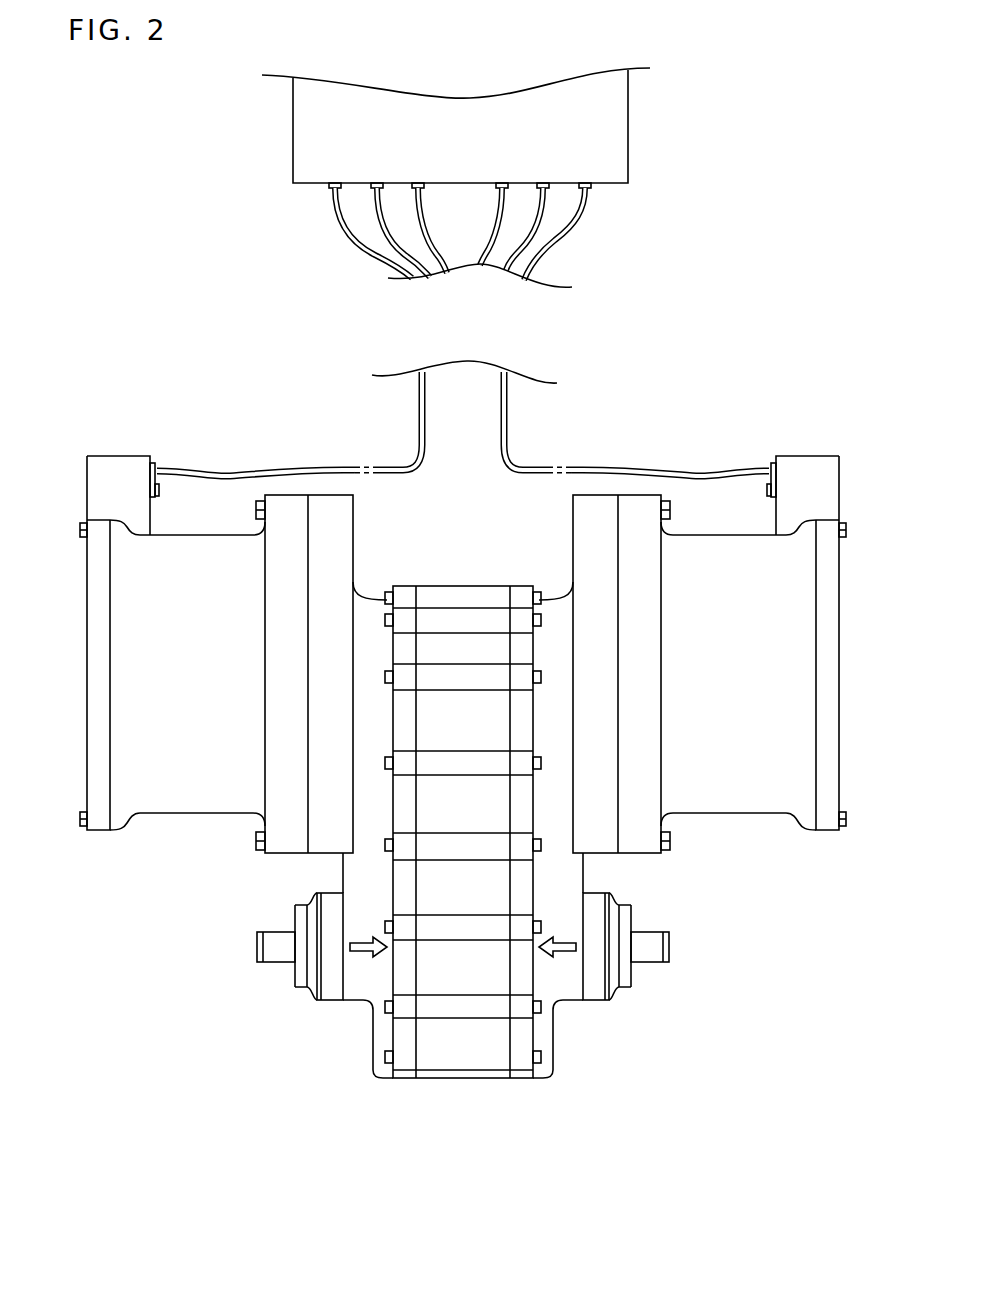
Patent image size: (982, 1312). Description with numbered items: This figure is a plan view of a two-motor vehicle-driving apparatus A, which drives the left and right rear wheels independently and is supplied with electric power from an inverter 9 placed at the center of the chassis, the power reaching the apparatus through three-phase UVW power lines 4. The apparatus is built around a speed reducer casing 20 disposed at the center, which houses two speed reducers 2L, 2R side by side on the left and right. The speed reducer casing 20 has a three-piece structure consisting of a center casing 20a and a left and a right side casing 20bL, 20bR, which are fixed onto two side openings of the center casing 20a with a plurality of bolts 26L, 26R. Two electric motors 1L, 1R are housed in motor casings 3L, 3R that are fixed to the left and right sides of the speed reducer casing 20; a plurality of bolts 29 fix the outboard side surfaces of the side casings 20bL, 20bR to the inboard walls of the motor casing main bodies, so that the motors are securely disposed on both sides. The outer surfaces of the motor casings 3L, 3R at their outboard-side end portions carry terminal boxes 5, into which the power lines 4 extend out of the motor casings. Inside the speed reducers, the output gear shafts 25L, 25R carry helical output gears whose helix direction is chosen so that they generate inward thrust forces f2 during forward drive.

The inverter 9 is at (558, 127).
The two-motor vehicle-driving apparatus A is at (300, 292).
The three-phase UVW power lines 4 is at (556, 238).
The terminal boxes 5 is at (117, 492).
The left electric motor 1L is at (125, 772).
The right electric motor 1R is at (810, 795).
The left motor casing 3L is at (190, 765).
The right motor casing 3R is at (737, 770).
The bolts 29 is at (258, 848).
The left speed reducer 2L is at (354, 1008).
The right speed reducer 2R is at (567, 1015).
The bolts 26L is at (337, 895).
The bolts 26R is at (590, 900).
The left output gear shaft 25L is at (250, 950).
The right output gear shaft 25R is at (680, 952).
The inward thrust forces f2 is at (362, 948).
The speed reducer casing 20 is at (378, 1172).
The center casing 20a is at (467, 1030).
The left side casing 20bL is at (383, 1027).
The right side casing 20bR is at (543, 1033).